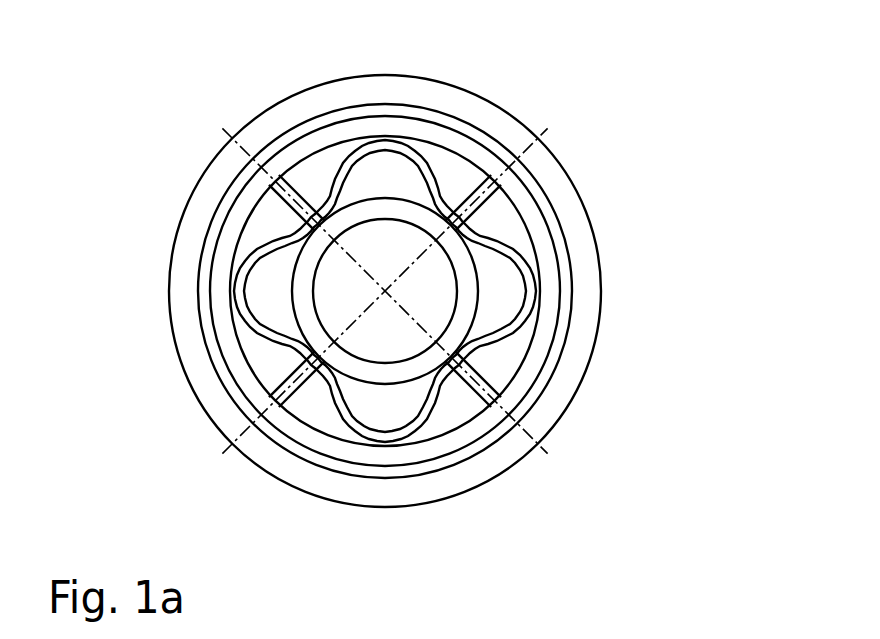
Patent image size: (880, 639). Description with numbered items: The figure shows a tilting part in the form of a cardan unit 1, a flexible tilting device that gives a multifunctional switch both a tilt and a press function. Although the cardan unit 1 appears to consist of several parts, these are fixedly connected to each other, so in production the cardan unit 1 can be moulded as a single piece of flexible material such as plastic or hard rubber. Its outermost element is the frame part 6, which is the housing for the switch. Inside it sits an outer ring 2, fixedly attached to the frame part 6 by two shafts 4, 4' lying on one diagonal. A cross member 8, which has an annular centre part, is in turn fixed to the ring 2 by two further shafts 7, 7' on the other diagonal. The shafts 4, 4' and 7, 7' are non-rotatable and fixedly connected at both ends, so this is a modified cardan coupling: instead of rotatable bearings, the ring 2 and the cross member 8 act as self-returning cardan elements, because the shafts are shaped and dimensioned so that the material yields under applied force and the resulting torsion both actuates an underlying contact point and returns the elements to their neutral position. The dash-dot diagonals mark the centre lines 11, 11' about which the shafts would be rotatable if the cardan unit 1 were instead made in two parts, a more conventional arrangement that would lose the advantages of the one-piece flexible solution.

The cardan unit 1 is at (607, 235).
The outer ring 2 is at (432, 158).
The shaft 4 is at (568, 171).
The shaft 4' is at (225, 401).
The frame part 6 is at (585, 312).
The shaft 7 is at (238, 151).
The shaft 7' is at (577, 418).
The cross member 8 is at (305, 283).
The centre line 11 is at (384, 235).
The centre line 11' is at (384, 339).